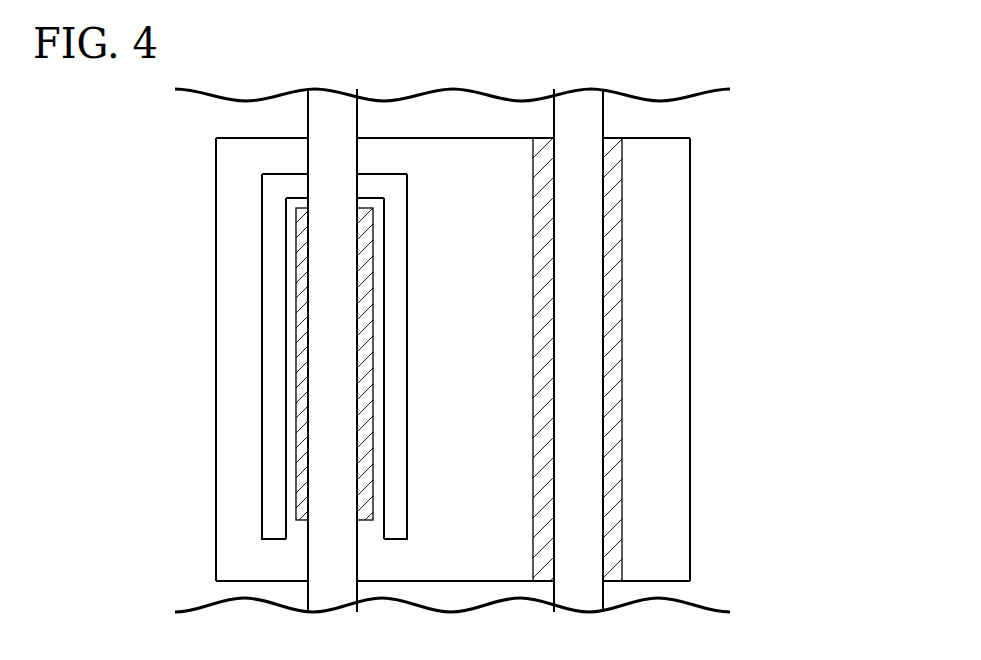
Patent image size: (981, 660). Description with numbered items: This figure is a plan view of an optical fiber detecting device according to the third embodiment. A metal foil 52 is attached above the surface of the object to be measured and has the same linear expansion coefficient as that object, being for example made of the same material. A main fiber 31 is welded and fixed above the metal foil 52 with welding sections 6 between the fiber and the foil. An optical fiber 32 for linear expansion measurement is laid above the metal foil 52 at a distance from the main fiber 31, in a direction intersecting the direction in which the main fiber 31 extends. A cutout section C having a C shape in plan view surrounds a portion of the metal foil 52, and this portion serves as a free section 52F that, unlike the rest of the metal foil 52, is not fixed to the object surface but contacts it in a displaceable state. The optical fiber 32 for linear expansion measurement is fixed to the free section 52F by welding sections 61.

The main fiber 31 is at (580, 229).
The optical fiber for linear expansion measurement 32 is at (322, 262).
The metal foil 52 is at (668, 340).
The free section 52F is at (290, 346).
The welding sections 6 is at (613, 409).
The welding sections 61 is at (300, 477).
The cutout section C is at (265, 403).